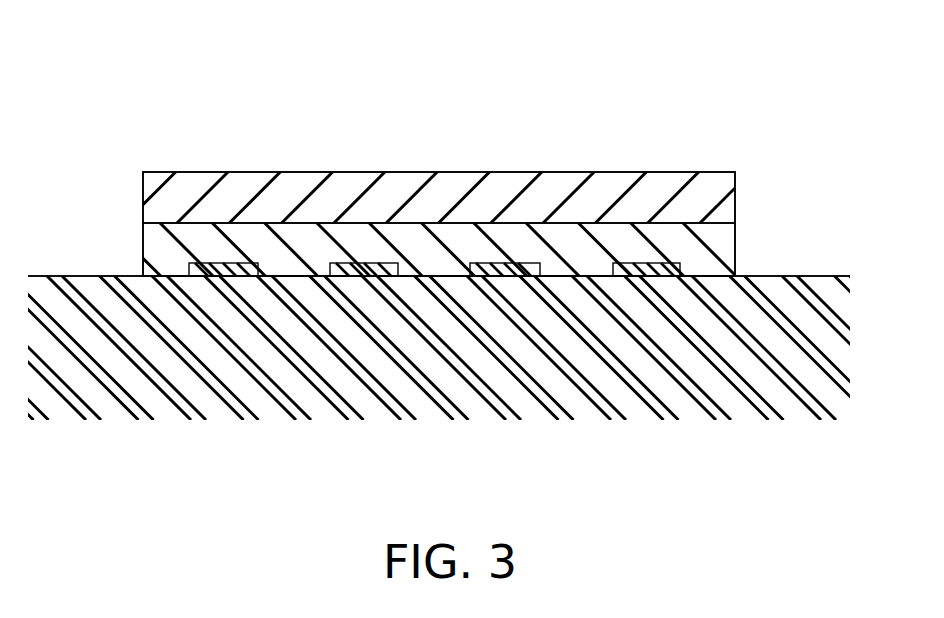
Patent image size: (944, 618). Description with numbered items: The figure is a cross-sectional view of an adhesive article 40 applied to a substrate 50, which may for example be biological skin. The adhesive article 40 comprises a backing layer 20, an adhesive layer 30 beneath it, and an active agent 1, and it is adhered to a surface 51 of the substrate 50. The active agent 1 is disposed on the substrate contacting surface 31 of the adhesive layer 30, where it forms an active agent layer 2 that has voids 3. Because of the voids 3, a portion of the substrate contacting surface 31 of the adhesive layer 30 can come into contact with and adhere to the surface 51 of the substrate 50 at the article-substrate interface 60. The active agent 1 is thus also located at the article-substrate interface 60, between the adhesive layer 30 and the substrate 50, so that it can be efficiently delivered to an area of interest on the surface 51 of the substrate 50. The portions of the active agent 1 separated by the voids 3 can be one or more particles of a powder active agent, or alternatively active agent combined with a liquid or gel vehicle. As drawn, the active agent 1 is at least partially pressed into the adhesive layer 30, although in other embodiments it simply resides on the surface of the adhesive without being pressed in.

The adhesive article 40 is at (104, 94).
The backing layer 20 is at (348, 192).
The adhesive layer 30 is at (717, 243).
The substrate contacting surface 31 is at (713, 280).
The substrate 50 is at (538, 366).
The surface 51 is at (76, 276).
The active agent 1 is at (223, 267).
The active agent layer 2 is at (174, 268).
The voids 3 is at (284, 258).
The article-substrate interface 60 is at (200, 290).